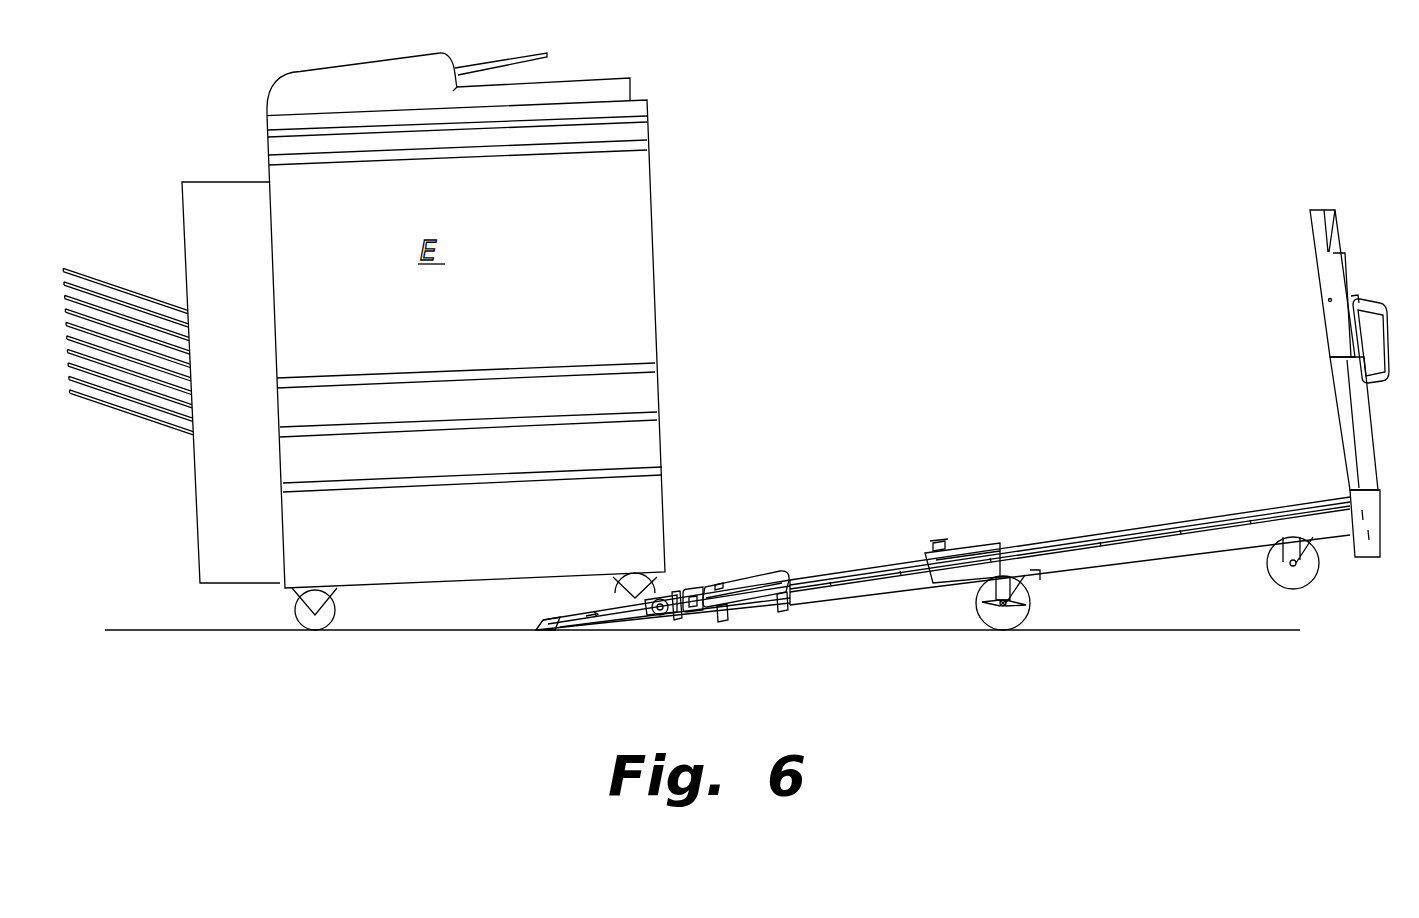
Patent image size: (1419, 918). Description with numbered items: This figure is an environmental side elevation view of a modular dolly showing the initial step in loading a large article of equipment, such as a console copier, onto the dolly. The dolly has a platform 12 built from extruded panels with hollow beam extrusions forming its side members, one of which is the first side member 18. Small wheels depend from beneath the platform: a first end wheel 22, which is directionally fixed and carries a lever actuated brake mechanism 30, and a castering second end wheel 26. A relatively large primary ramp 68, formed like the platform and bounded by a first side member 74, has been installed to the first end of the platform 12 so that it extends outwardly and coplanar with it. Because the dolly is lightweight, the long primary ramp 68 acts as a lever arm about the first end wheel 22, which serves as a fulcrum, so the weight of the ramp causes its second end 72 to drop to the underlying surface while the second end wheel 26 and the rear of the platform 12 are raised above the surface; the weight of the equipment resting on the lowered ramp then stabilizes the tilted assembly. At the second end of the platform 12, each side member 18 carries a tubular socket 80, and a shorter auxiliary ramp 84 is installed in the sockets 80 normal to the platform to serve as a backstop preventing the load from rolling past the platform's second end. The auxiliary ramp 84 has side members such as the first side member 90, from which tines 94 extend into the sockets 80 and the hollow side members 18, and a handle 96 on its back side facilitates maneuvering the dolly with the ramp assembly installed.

The platform 12 is at (1075, 503).
The first side member 18 is at (1165, 514).
The first end wheel 22 is at (1000, 632).
The second end wheel 26 is at (1270, 566).
The lever actuated brake mechanism 30 is at (1030, 601).
The primary ramp 68 is at (810, 540).
The second end of primary ramp 72 is at (537, 632).
The first side member of primary ramp 74 is at (802, 610).
The socket 80 is at (1384, 515).
The auxiliary ramp 84 is at (1260, 314).
The first side member of auxiliary ramp 90 is at (1318, 247).
The tine 94 is at (1330, 380).
The handle 96 is at (1382, 322).